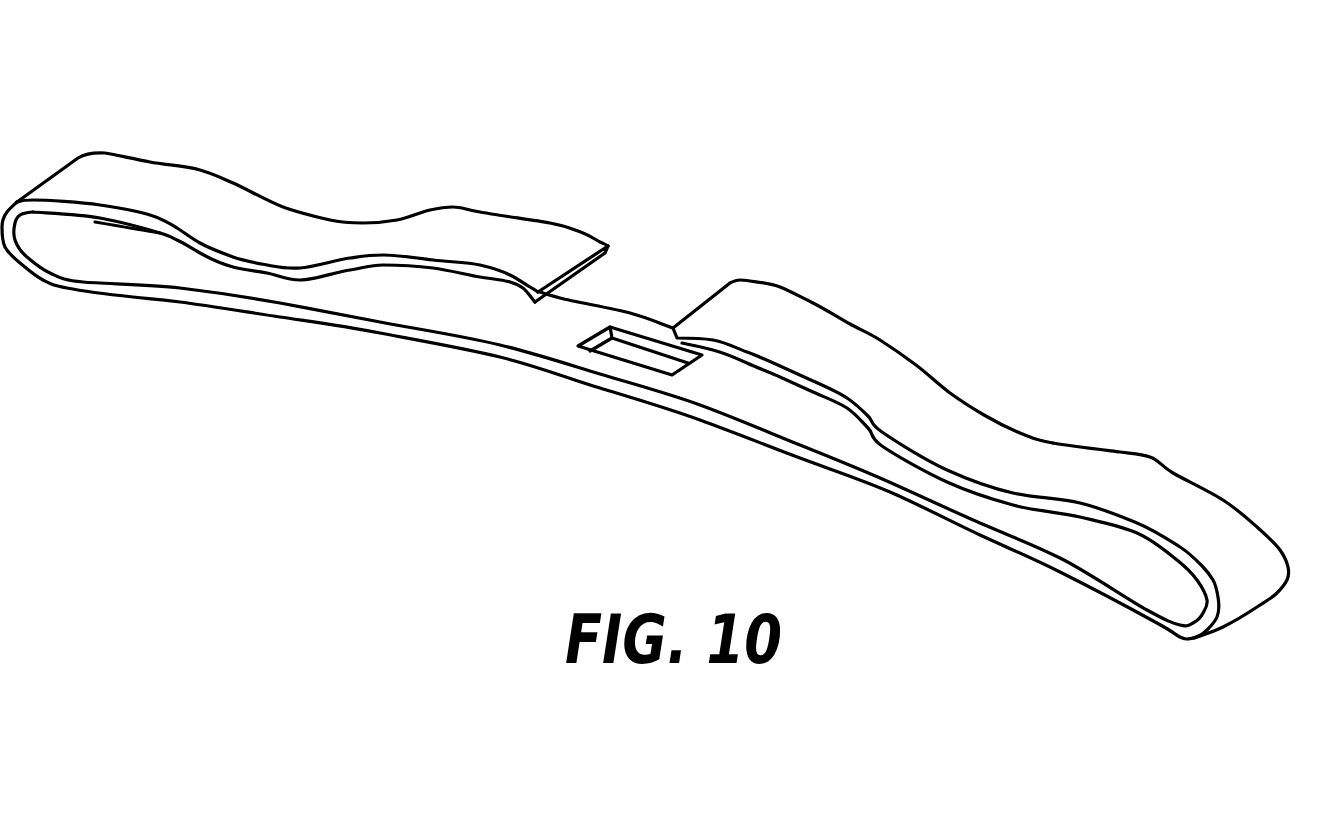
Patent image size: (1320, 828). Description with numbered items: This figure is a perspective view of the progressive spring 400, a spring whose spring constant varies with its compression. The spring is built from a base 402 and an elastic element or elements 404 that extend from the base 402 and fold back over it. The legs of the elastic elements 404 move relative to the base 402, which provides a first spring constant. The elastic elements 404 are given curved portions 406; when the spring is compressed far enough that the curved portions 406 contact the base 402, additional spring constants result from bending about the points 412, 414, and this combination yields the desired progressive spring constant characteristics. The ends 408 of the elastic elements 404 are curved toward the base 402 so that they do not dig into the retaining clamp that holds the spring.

The progressive spring 400 is at (467, 459).
The base 402 is at (752, 434).
The elastic element 404 is at (190, 180).
The curved portion 406 is at (1012, 447).
The end 408 is at (600, 262).
The bending point 412 is at (185, 240).
The bending point 414 is at (340, 270).